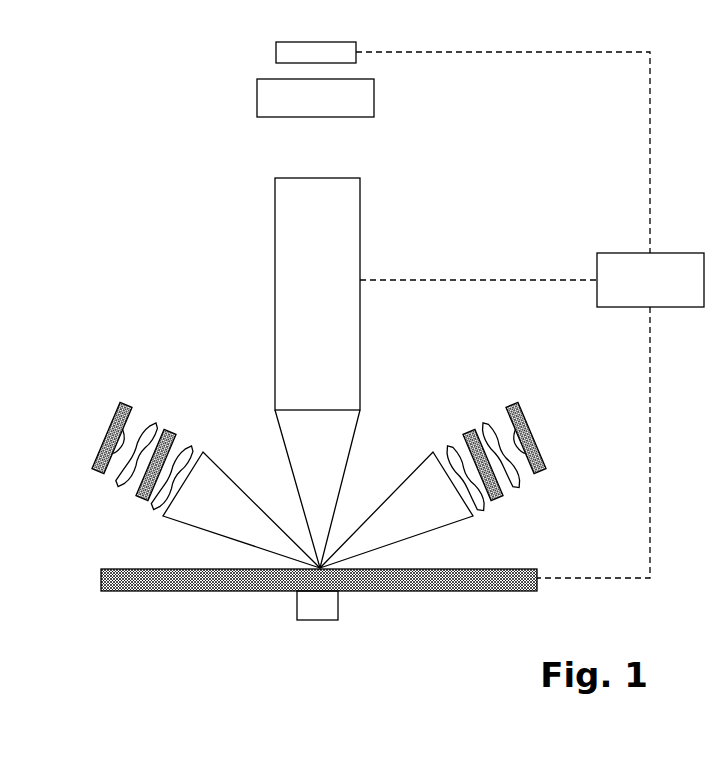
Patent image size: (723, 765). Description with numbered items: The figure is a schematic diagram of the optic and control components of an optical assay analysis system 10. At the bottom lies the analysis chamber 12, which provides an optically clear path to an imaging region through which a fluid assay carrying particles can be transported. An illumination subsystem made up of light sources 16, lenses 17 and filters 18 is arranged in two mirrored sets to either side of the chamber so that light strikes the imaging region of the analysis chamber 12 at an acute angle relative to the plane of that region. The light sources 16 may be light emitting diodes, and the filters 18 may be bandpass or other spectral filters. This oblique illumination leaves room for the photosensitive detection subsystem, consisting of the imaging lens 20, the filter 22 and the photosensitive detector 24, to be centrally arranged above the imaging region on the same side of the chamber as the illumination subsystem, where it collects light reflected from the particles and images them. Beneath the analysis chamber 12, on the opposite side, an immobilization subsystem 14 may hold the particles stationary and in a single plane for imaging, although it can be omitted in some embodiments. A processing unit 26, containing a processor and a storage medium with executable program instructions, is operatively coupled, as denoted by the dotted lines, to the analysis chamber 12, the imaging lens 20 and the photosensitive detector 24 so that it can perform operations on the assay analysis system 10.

The assay analysis system 10 is at (132, 183).
The analysis chamber 12 is at (537, 590).
The immobilization subsystem 14 is at (297, 622).
The light sources 16 is at (110, 437).
The lenses 17 is at (158, 425).
The filters 18 is at (137, 498).
The imaging lens 20 is at (278, 226).
The filter 22 is at (257, 103).
The photosensitive detector 24 is at (278, 49).
The processing unit 26 is at (530, 315).